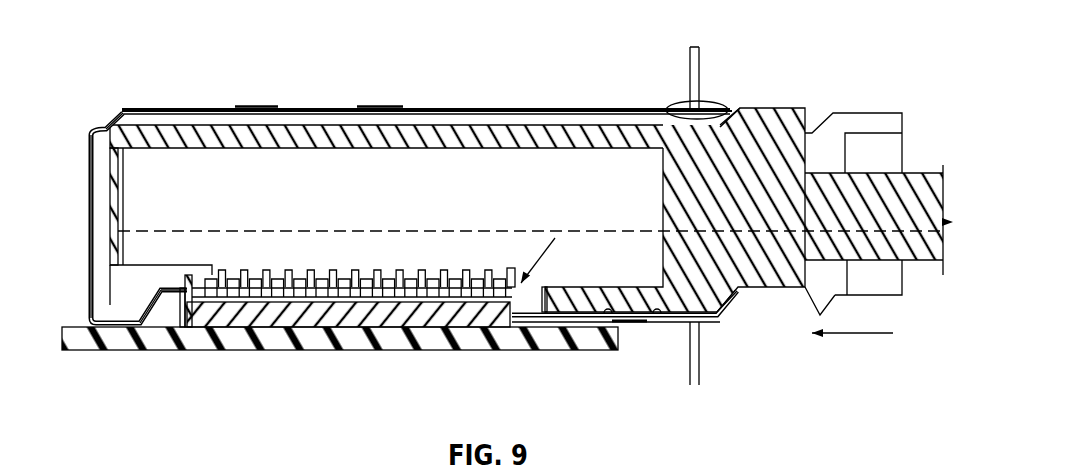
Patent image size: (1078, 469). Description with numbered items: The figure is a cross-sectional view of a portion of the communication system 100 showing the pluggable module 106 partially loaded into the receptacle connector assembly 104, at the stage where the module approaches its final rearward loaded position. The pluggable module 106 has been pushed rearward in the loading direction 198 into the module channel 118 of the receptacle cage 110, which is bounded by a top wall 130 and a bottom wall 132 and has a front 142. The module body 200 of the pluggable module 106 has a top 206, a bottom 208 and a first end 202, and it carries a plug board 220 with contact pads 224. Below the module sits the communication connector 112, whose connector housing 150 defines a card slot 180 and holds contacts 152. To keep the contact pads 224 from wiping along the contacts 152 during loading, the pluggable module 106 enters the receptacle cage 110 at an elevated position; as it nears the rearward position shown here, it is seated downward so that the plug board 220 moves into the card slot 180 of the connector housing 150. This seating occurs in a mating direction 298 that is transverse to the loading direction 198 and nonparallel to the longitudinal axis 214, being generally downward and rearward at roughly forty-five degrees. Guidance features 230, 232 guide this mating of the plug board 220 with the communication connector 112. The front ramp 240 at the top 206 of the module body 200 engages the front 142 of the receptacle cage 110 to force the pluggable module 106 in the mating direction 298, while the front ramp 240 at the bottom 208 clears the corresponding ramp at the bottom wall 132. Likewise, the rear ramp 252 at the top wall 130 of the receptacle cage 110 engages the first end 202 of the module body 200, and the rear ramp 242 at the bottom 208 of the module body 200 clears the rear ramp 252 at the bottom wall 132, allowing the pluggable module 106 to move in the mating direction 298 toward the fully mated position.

The communication system 100 is at (733, 15).
The receptacle connector assembly 104 is at (84, 167).
The pluggable module 106 is at (851, 89).
The receptacle cage 110 is at (217, 109).
The communication connector 112 is at (318, 306).
The module channel 118 is at (718, 110).
The top wall 130 is at (625, 123).
The bottom wall 132 is at (598, 323).
The front 142 is at (740, 109).
The connector housing 150 is at (513, 297).
The contacts 152 is at (387, 292).
The card slot 180 is at (527, 314).
The loading direction 198 is at (855, 334).
The module body 200 is at (822, 313).
The first end 202 is at (110, 213).
The top 206 is at (317, 125).
The bottom 208 is at (650, 322).
The longitudinal axis 214 is at (883, 218).
The plug board 220 is at (446, 172).
The contact pads 224 is at (255, 285).
The guidance feature 230 is at (167, 298).
The guidance feature 232 is at (111, 117).
The front ramp 240 is at (703, 107).
The rear ramp 242 is at (191, 300).
The rear ramp 252 is at (118, 112).
The mating direction 298 is at (545, 262).